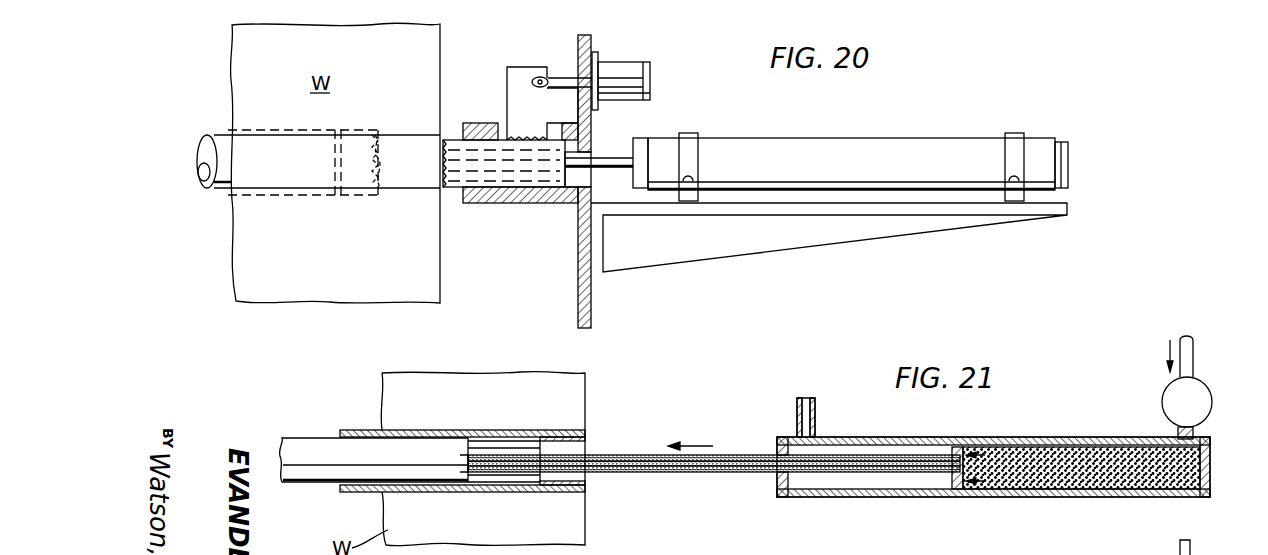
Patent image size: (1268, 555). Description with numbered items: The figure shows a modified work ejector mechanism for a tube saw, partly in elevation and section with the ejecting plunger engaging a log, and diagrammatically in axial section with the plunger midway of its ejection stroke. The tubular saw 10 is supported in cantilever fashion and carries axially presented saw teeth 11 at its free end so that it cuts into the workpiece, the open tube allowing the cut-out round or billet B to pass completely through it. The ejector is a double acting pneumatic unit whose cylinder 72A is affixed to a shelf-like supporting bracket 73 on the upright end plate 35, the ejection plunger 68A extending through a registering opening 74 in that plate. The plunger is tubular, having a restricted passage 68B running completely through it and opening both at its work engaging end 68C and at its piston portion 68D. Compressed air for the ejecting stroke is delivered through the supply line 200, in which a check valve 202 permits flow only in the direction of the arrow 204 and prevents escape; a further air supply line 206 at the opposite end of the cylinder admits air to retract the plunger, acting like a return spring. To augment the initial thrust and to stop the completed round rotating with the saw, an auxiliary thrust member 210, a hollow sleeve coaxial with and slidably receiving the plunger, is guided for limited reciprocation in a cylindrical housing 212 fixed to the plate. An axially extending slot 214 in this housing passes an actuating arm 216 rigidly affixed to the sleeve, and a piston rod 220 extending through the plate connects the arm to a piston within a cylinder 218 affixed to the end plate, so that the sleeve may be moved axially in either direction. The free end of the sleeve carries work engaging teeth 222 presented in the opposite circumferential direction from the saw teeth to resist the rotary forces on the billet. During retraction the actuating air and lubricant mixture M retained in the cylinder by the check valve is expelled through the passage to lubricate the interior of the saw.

In FIG. 20, the tubular saw 10 is at (214, 140).
In FIG. 21, the tubular saw 10 is at (498, 436).
In FIG. 20, the saw teeth 11 is at (388, 135).
In FIG. 20, the work engaging teeth 222 is at (443, 166).
In FIG. 20, the auxiliary thrust member 210 is at (495, 178).
In FIG. 20, the slot 214 is at (502, 128).
In FIG. 20, the cylindrical housing 212 is at (541, 198).
In FIG. 20, the actuating arm 216 is at (517, 75).
In FIG. 20, the piston rod 220 is at (562, 78).
In FIG. 20, the cylinder 218 is at (628, 72).
In FIG. 20, the end plate 35 is at (561, 181).
In FIG. 20, the opening 74 is at (597, 178).
In FIG. 20, the ejection plunger 68A is at (620, 160).
In FIG. 21, the ejection plunger 68A is at (620, 455).
In FIG. 20, the cylinder 72A is at (877, 150).
In FIG. 21, the cylinder 72A is at (1055, 497).
In FIG. 20, the supporting bracket 73 is at (812, 233).
In FIG. 21, the billet B is at (320, 445).
In FIG. 21, the restricted passage 68B is at (676, 473).
In FIG. 21, the work engaging end 68C is at (462, 472).
In FIG. 21, the piston portion 68D is at (958, 497).
In FIG. 21, the air supply line 206 is at (815, 405).
In FIG. 21, the air and lubricant mixture M is at (1135, 482).
In FIG. 21, the check valve 202 is at (1162, 402).
In FIG. 21, the supply line 200 is at (1190, 355).
In FIG. 21, the arrow 204 is at (1166, 351).